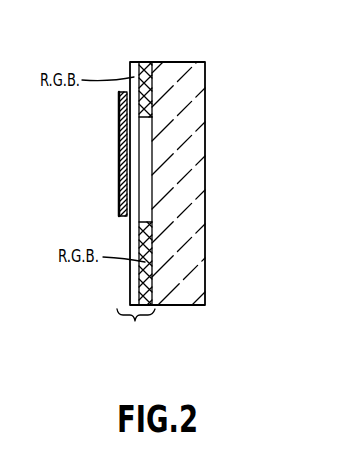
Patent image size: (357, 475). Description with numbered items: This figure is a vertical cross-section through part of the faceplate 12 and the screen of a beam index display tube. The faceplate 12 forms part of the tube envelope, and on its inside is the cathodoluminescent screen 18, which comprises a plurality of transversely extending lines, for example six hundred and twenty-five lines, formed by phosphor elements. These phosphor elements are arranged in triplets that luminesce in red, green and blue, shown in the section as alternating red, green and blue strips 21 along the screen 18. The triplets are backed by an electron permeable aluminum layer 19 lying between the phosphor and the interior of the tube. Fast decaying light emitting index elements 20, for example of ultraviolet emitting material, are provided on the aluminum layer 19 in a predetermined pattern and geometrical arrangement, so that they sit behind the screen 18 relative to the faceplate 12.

The faceplate 12 is at (190, 119).
The cathodoluminescent screen 18 is at (135, 321).
The electron permeable aluminum layer 19 is at (133, 70).
The index elements 20 is at (115, 157).
The colour filter strips 21 is at (131, 70).